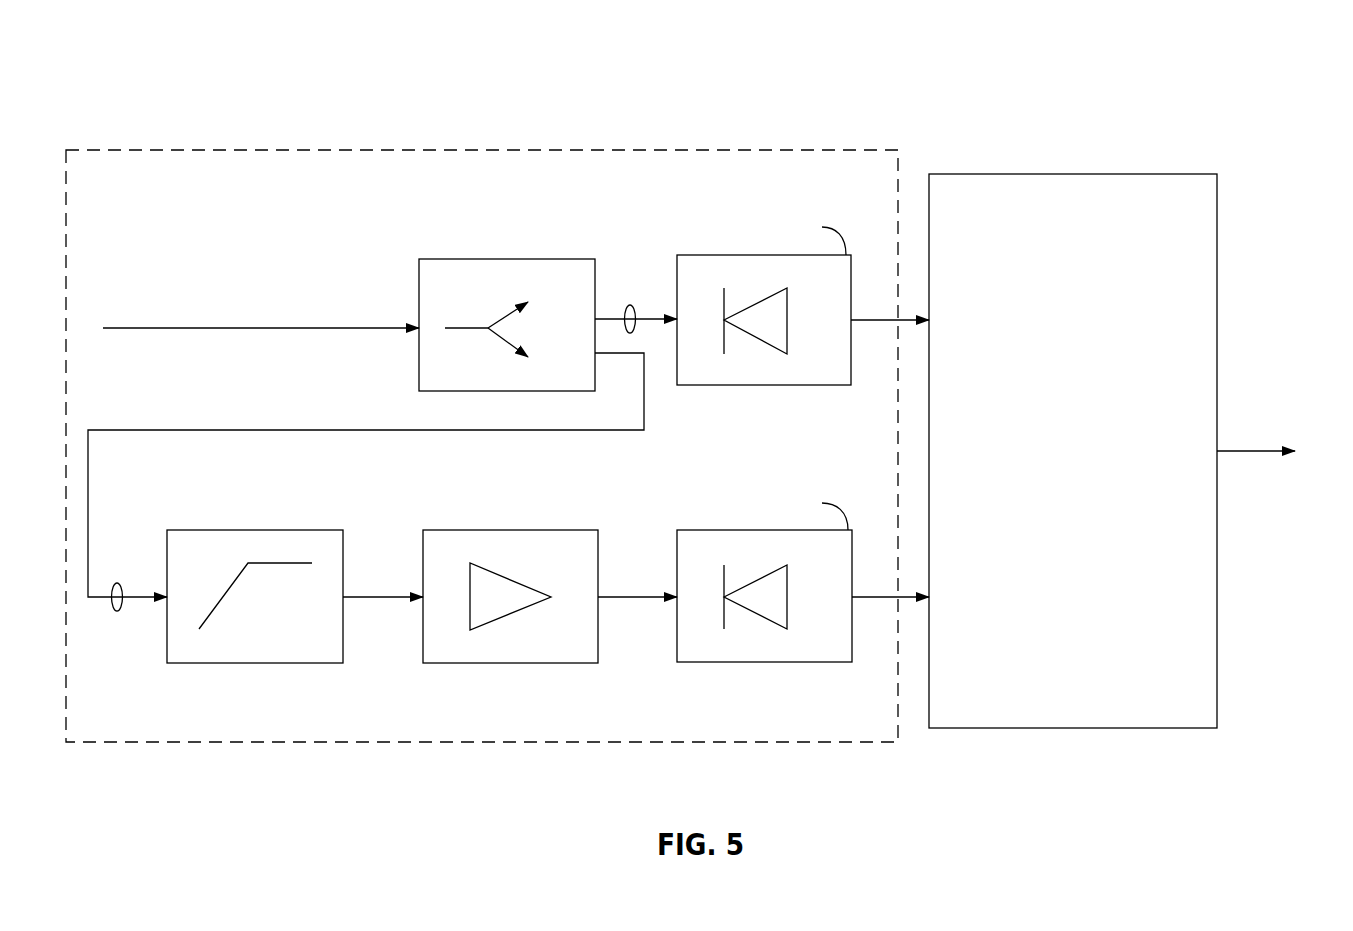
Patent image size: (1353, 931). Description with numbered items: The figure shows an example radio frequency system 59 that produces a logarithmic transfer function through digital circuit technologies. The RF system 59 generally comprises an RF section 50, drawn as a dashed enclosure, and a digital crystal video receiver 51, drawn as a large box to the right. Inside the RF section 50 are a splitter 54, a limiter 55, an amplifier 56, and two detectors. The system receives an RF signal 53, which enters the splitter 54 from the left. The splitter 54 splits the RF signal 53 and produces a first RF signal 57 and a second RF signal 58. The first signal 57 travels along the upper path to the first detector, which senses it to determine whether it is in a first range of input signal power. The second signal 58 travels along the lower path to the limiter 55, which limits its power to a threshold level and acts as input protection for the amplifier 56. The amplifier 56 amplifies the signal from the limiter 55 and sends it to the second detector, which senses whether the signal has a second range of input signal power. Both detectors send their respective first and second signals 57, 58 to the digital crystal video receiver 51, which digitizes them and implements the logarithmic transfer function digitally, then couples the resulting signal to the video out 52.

The RF section 50 is at (244, 742).
The digital crystal video receiver 51 is at (1073, 451).
The video out 52 is at (1260, 448).
The RF signal 53 is at (320, 328).
The splitter 54 is at (590, 259).
The limiter 55 is at (337, 530).
The amplifier 56 is at (590, 530).
The first RF signal 57 is at (632, 305).
The second RF signal 58 is at (121, 583).
The RF system 59 is at (1288, 68).